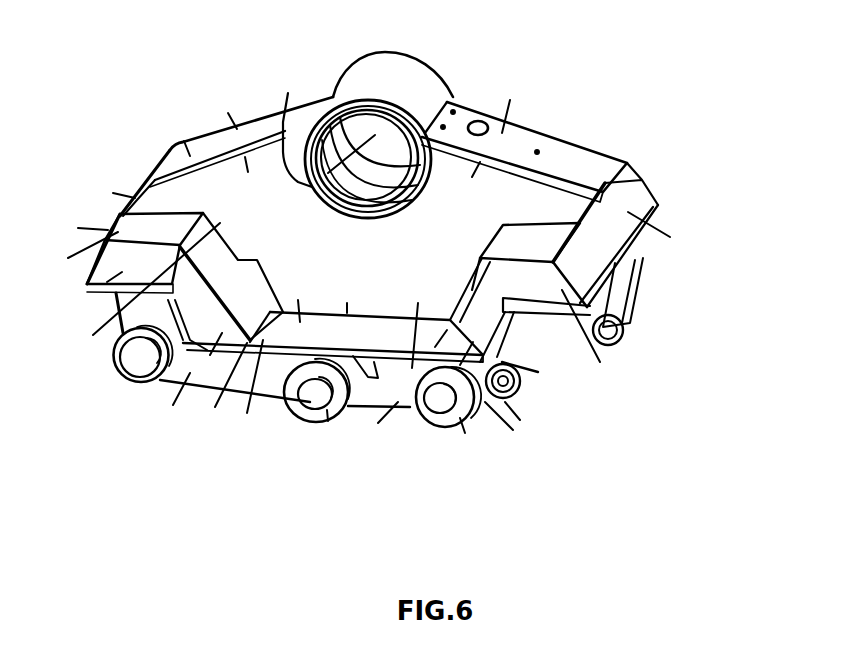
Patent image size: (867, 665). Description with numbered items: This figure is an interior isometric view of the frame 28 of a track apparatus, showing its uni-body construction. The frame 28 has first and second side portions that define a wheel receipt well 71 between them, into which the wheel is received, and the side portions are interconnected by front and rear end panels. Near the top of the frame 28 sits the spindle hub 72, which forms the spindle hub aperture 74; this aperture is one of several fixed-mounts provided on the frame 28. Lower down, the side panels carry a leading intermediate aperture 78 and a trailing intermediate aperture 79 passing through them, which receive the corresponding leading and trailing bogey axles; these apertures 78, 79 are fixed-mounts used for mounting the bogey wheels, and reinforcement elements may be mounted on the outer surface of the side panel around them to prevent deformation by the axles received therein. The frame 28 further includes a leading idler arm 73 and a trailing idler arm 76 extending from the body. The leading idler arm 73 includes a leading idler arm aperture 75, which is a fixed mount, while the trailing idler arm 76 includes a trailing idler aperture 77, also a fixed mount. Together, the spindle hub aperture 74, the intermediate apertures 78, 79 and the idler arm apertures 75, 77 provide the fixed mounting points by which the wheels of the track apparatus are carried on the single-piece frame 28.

The frame 28 is at (530, 130).
The wheel receipt well 71 is at (188, 195).
The spindle hub 72 is at (363, 75).
The leading idler arm 73 is at (630, 282).
The spindle hub aperture 74 is at (290, 95).
The leading idler arm aperture 75 is at (617, 340).
The trailing idler arm 76 is at (180, 368).
The trailing idler aperture 77 is at (138, 365).
The leading intermediate aperture 78 is at (433, 408).
The trailing intermediate aperture 79 is at (303, 407).